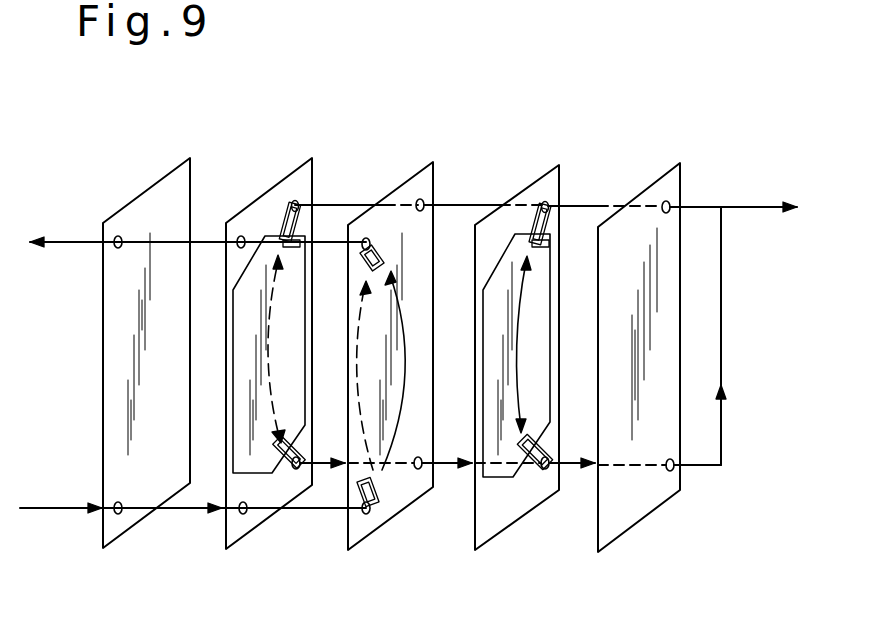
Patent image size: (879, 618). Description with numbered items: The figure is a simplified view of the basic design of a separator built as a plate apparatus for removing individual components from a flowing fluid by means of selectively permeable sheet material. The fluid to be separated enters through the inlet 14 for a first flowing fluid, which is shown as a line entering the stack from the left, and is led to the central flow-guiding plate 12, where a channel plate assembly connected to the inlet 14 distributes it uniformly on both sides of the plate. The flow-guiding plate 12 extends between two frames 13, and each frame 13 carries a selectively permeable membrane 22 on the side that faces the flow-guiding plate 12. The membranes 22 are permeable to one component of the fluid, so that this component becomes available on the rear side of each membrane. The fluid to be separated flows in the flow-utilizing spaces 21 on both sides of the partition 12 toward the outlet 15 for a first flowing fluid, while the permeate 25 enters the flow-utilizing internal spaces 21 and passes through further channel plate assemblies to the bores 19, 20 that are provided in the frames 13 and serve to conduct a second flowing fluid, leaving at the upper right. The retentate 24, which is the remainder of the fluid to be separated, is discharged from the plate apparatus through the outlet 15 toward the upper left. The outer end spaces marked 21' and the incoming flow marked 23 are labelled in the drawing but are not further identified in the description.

The flow-guiding plate 12 is at (417, 245).
The frame 13 is at (226, 425).
The inlet for a first flowing fluid 14 is at (120, 515).
The outlet for a first flowing fluid 15 is at (118, 238).
The bore 19 is at (293, 202).
The bore 20 is at (298, 473).
The flow-utilizing space 21 is at (393, 370).
The end chamber 21' is at (399, 338).
The selectively permeable membrane 22 is at (301, 358).
The inlet flow 23 is at (53, 510).
The retentate 24 is at (68, 240).
The permeate 25 is at (755, 205).